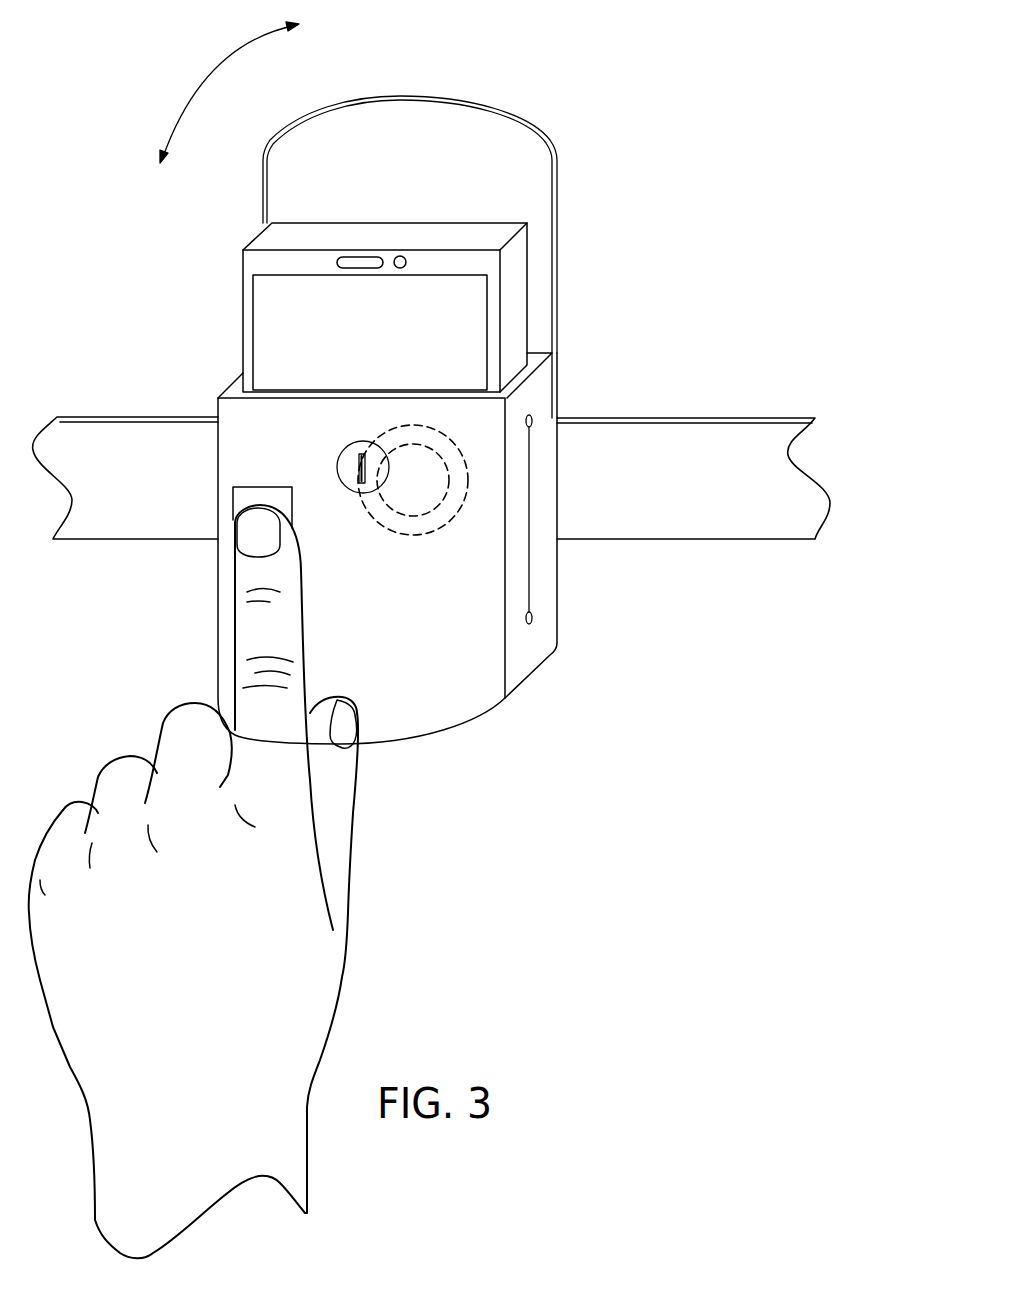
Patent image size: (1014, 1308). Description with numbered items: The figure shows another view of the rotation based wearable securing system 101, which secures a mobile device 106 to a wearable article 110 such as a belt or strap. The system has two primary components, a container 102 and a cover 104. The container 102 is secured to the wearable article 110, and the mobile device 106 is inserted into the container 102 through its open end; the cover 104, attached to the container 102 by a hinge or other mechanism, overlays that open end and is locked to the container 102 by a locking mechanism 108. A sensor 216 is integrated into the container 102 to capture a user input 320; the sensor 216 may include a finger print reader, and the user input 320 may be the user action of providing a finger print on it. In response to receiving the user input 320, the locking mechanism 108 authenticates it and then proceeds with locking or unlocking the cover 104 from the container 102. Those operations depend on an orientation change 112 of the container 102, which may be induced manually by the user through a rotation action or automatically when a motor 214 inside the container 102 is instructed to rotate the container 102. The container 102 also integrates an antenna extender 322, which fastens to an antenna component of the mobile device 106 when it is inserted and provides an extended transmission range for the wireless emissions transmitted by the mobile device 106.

The rotation based wearable securing system 101 is at (700, 22).
The container 102 is at (455, 733).
The cover 104 is at (536, 122).
The mobile device 106 is at (513, 305).
The locking mechanism 108 is at (341, 452).
The wearable article 110 is at (730, 418).
The orientation change 112 is at (208, 72).
The motor 214 is at (400, 535).
The sensor 216 is at (264, 487).
The user input 320 is at (313, 966).
The antenna extender 322 is at (533, 548).